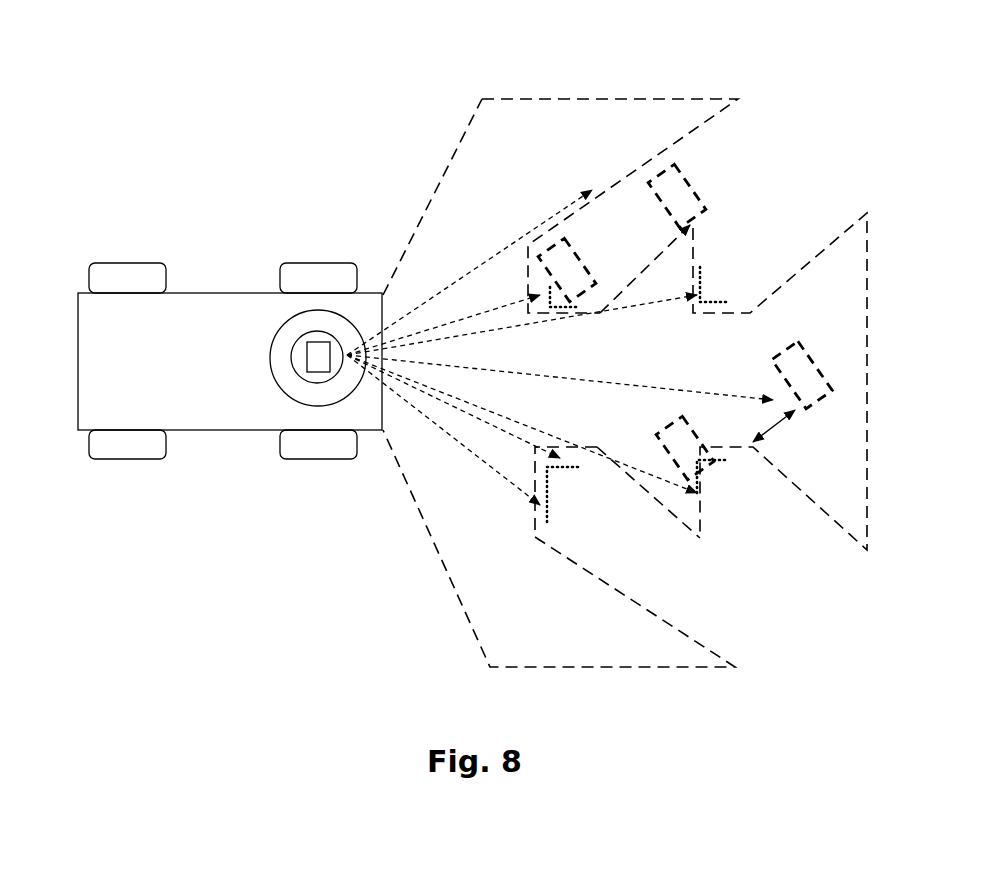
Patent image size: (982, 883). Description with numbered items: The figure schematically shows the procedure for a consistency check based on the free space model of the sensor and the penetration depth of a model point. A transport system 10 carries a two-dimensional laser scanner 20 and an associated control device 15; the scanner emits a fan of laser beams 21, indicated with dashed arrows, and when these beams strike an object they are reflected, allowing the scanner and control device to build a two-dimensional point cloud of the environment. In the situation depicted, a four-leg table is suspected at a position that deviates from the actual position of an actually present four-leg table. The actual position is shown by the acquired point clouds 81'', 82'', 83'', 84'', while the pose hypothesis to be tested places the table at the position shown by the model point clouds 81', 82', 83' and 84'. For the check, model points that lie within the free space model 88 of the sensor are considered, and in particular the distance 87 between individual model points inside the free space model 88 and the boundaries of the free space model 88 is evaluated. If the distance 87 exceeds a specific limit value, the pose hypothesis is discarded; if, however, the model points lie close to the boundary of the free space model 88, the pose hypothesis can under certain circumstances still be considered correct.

The transport system 10 is at (117, 236).
The control device 15 is at (297, 385).
The 2D laser scanner 20 is at (313, 355).
The laser beams 21 is at (428, 300).
The free space model 88 is at (572, 92).
The model point cloud 83' is at (588, 269).
The acquired point cloud 83'' is at (548, 327).
The model point cloud 84' is at (731, 195).
The acquired point cloud 84'' is at (740, 274).
The model point cloud 81' is at (693, 410).
The acquired point cloud 81'' is at (516, 509).
The model point cloud 82' is at (813, 357).
The acquired point cloud 82'' is at (673, 497).
The distance 87 is at (780, 423).